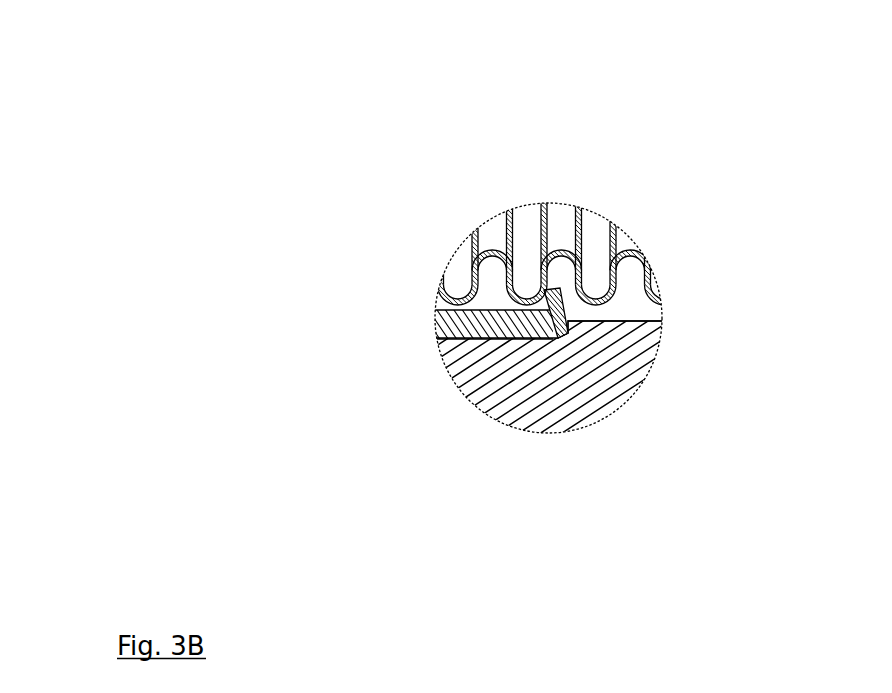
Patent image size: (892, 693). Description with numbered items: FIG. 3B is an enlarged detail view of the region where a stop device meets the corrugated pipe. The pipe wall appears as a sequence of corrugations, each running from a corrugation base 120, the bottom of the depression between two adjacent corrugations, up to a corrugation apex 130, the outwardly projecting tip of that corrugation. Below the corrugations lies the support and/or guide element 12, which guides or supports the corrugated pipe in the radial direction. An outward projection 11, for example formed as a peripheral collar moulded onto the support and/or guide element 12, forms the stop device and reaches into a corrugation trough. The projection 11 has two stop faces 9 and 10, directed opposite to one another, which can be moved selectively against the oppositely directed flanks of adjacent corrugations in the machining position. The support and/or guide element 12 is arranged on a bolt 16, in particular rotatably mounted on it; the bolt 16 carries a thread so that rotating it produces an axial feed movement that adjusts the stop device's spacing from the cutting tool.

The stop face 9 is at (548, 300).
The stop face 10 is at (563, 316).
The projection 11 is at (558, 296).
The support and/or guide element 12 is at (457, 331).
The bolt 16 is at (582, 387).
The corrugation base 120 is at (564, 252).
The corrugation apex 130 is at (455, 302).